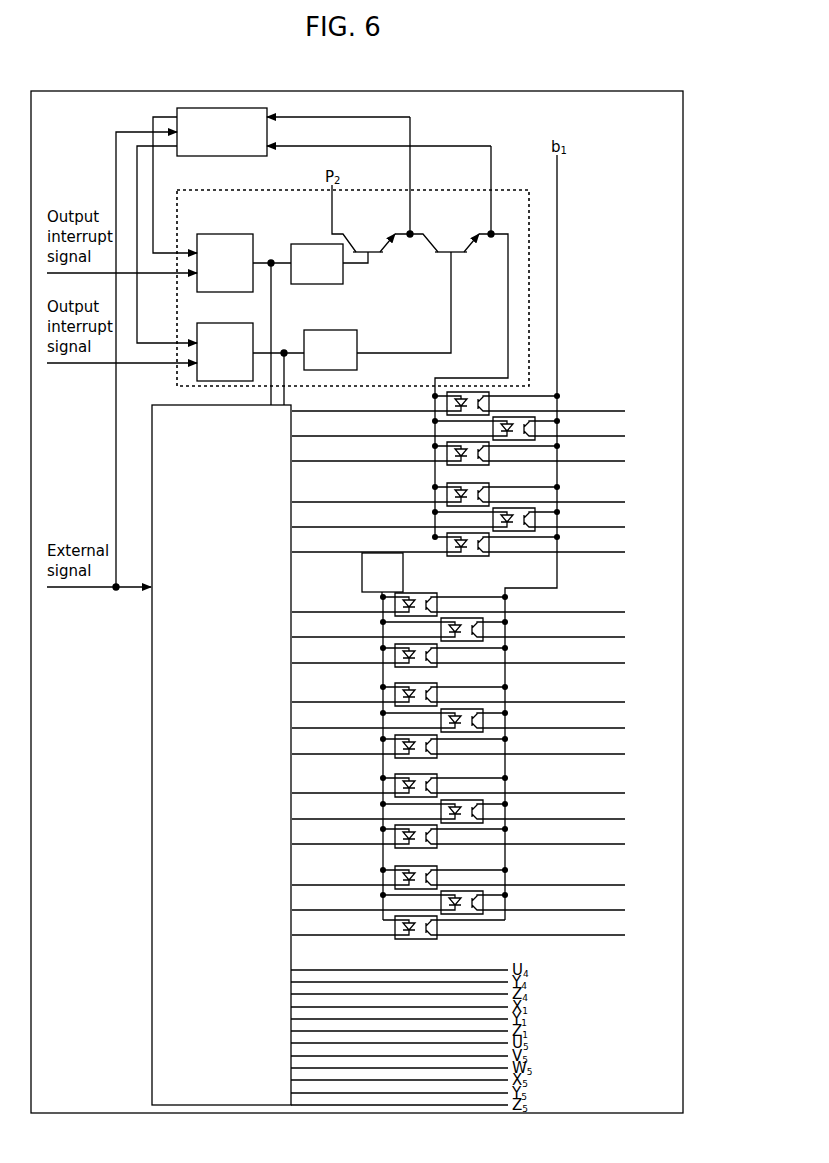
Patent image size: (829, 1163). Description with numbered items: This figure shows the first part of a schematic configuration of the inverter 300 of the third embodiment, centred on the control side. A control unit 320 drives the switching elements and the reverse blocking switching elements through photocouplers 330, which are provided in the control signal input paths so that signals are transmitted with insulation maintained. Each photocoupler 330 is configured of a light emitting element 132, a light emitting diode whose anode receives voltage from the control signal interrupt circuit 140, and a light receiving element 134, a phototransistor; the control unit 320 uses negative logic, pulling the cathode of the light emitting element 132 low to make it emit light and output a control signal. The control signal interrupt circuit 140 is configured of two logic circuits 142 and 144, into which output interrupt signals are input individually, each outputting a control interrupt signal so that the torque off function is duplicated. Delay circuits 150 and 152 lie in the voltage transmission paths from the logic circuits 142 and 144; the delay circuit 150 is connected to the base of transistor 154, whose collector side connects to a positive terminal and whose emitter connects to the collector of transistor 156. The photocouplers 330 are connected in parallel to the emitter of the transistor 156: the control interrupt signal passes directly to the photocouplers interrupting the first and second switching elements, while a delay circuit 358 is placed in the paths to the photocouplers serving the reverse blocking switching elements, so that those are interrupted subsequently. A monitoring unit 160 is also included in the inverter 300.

The inverter 300 is at (636, 91).
The monitoring unit 160 is at (262, 108).
The control signal interrupt circuit 140 is at (248, 190).
The logic circuit 142 is at (240, 234).
The logic circuit 144 is at (240, 323).
The delay circuit 150 is at (304, 244).
The delay circuit 152 is at (316, 330).
The transistor 154 is at (395, 218).
The transistor 156 is at (480, 218).
The control unit 320 is at (168, 405).
The photocoupler 330 is at (473, 682).
The delay circuit 358 is at (362, 580).
The light emitting element 132 is at (398, 938).
The light receiving element 134 is at (424, 938).